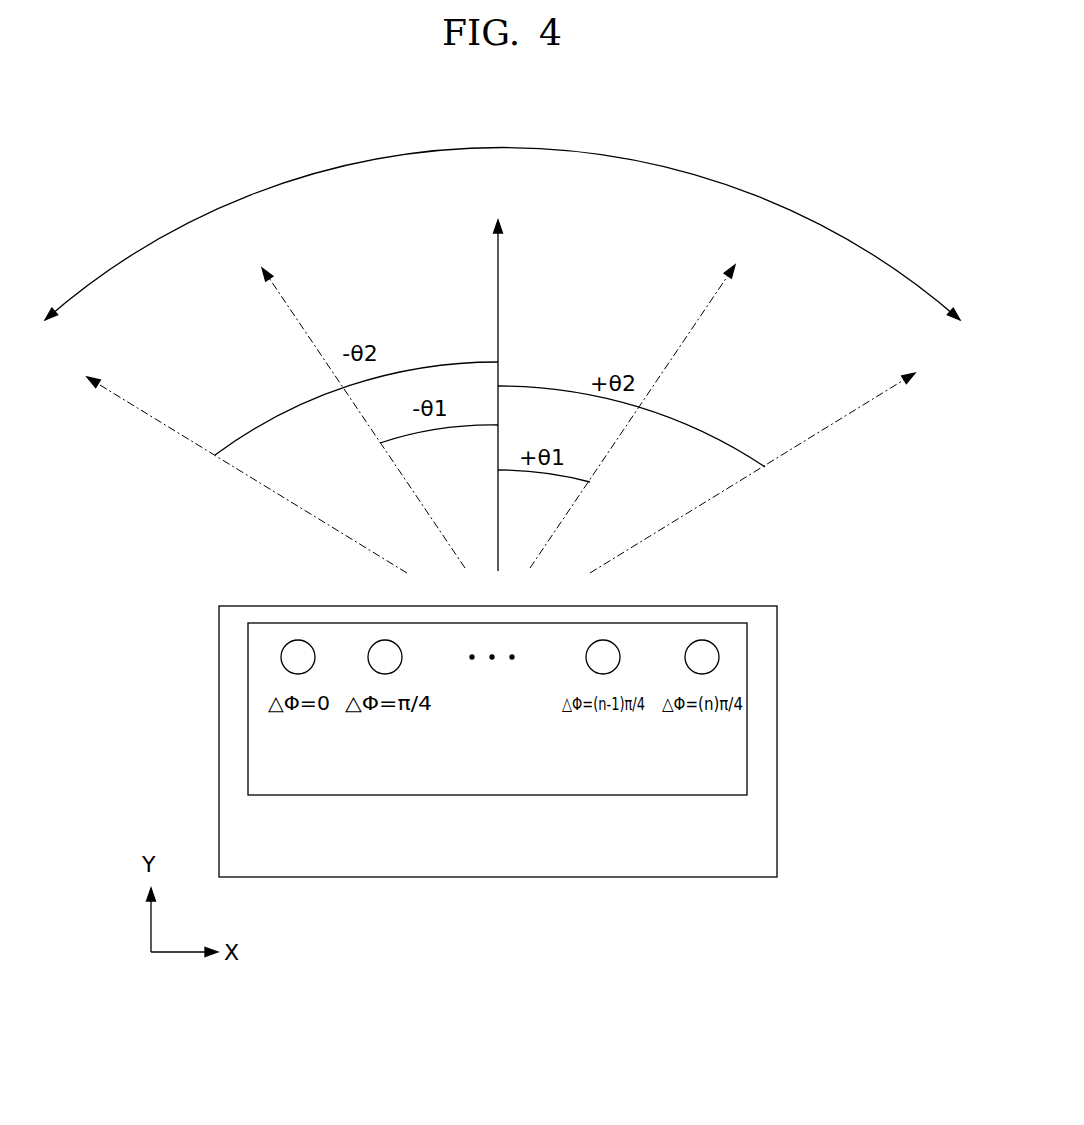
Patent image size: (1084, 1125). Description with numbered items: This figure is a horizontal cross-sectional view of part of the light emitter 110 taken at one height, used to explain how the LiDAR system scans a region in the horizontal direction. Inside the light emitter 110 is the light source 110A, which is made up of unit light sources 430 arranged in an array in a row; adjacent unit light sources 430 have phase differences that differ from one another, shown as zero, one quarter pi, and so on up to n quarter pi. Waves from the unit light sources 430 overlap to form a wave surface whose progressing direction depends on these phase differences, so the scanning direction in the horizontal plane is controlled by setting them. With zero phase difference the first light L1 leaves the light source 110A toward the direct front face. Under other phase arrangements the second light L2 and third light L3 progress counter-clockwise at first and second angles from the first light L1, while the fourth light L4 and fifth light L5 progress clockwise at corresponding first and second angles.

The light emitter 110 is at (497, 877).
The light source 110A is at (612, 795).
The unit light sources 430 is at (281, 656).
The first light L1 is at (498, 298).
The second light L2 is at (303, 328).
The third light L3 is at (160, 420).
The fourth light L4 is at (697, 323).
The fifth light L5 is at (828, 423).